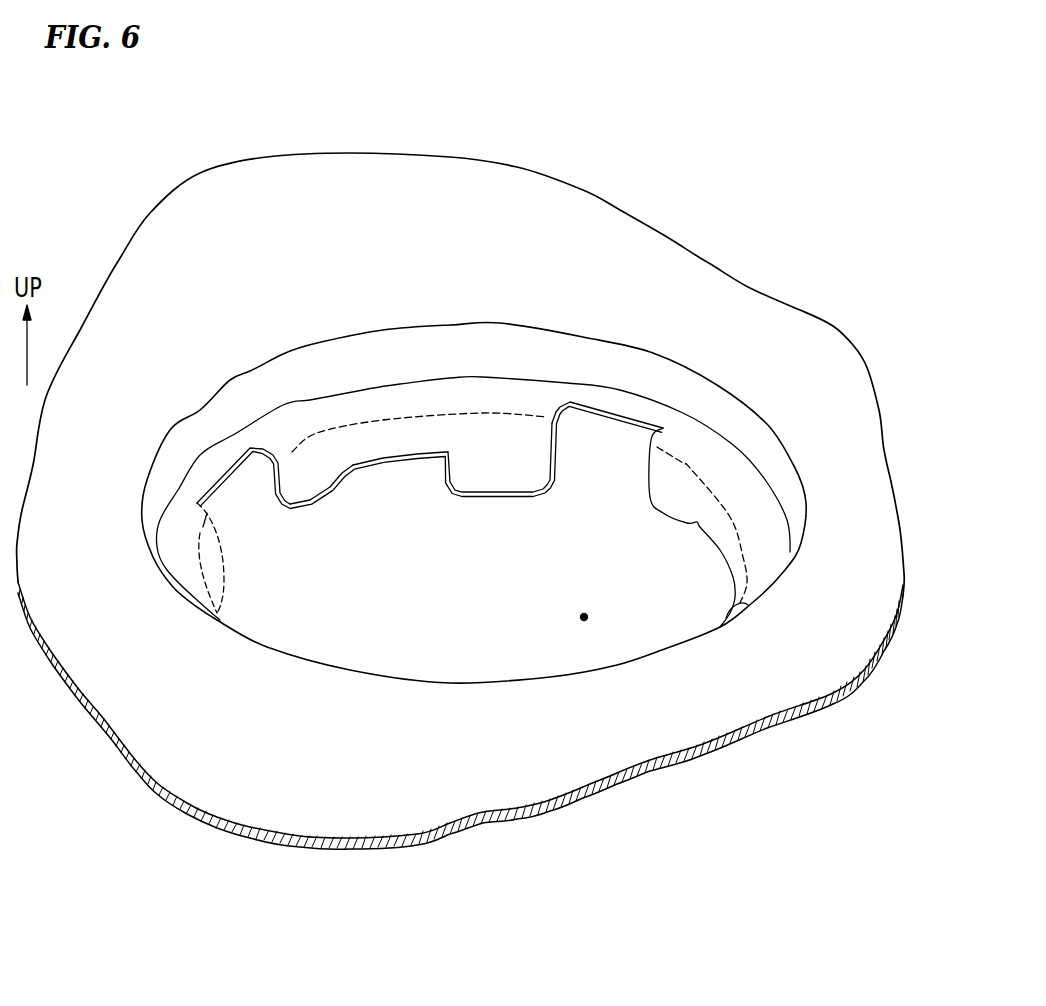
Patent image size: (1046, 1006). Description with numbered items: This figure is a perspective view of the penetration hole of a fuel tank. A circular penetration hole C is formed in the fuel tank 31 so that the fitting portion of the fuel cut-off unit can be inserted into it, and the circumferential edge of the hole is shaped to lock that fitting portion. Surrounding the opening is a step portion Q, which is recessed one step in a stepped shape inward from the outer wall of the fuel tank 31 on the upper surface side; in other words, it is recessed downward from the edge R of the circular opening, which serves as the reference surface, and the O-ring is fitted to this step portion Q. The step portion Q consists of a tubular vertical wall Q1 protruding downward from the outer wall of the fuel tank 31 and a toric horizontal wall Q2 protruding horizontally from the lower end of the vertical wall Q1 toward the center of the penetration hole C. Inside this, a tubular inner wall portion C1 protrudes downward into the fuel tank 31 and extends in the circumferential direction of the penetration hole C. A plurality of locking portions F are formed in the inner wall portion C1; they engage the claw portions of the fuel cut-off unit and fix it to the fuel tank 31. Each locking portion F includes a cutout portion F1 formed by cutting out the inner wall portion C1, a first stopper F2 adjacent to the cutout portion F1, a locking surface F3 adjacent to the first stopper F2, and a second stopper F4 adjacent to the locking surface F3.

The fuel tank 31 is at (698, 283).
The edge of the circular opening R is at (207, 397).
The step portion Q is at (388, 253).
The vertical wall Q1 is at (293, 383).
The horizontal wall Q2 is at (387, 400).
The locking portion F is at (495, 597).
The cutout portion F1 is at (222, 474).
The first stopper F2 is at (313, 490).
The locking surface F3 is at (383, 460).
The second stopper F4 is at (493, 492).
The inner wall portion C1 is at (557, 436).
The penetration hole C is at (584, 617).